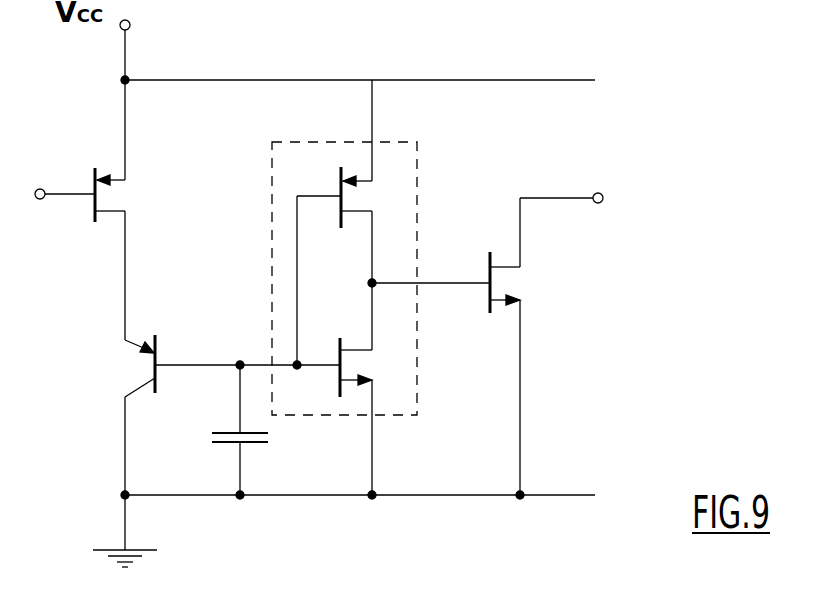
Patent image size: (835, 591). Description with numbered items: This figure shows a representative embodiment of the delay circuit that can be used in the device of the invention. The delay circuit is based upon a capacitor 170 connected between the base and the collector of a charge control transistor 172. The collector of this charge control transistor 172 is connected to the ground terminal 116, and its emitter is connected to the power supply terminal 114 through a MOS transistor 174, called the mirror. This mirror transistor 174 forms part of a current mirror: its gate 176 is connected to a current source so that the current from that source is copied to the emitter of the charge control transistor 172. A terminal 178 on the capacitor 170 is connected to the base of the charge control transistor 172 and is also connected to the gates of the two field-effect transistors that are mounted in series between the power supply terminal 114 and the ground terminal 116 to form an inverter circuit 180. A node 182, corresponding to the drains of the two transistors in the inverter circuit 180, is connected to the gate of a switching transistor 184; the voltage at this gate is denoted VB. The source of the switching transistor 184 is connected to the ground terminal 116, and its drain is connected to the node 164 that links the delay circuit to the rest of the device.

The power supply terminal 114 is at (130, 25).
The ground terminal 116 is at (110, 552).
The node 164 is at (600, 192).
The capacitor 170 is at (258, 444).
The charge control transistor 172 is at (150, 368).
The MOS transistor 174 is at (93, 181).
The gate 176 is at (42, 200).
The terminal 178 is at (239, 362).
The inverter circuit 180 is at (420, 197).
The node 182 is at (375, 286).
The switching transistor 184 is at (494, 292).